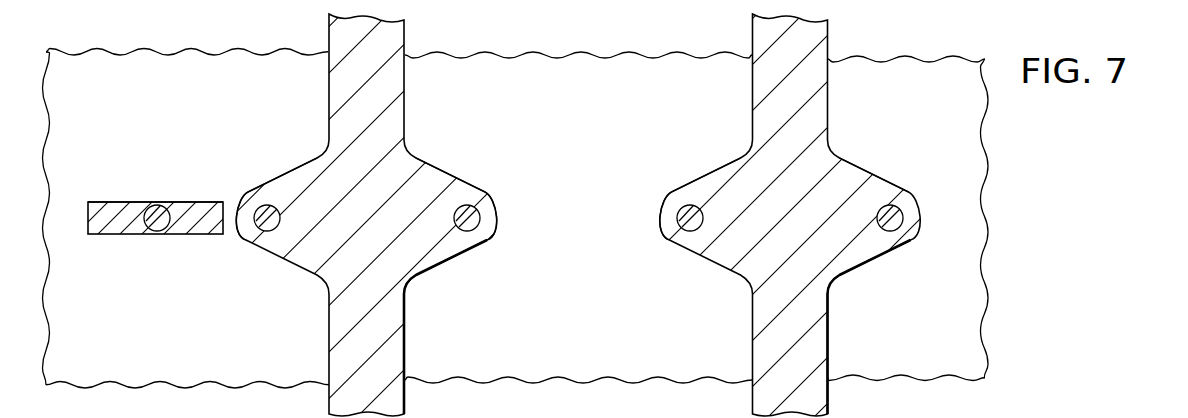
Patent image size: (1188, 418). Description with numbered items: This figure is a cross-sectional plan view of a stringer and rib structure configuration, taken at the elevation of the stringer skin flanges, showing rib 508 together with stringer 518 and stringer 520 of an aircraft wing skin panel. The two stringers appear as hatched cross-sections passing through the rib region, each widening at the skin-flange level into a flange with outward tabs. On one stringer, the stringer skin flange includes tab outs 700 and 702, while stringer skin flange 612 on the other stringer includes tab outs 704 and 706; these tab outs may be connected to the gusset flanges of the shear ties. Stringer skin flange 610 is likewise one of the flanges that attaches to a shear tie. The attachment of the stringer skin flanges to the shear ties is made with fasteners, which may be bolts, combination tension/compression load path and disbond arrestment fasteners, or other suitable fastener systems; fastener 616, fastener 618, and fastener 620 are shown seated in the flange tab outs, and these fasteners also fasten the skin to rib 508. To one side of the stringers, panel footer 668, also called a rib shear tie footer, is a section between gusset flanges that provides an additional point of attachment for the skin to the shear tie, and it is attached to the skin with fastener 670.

The stringer 520 is at (328, 40).
The stringer 518 is at (830, 28).
The tab out 700 is at (301, 166).
The tab out 702 is at (445, 167).
The tab out 704 is at (720, 167).
The tab out 706 is at (890, 188).
The fastener 616 is at (239, 232).
The stringer skin flange 610 is at (503, 220).
The stringer skin flange 612 is at (653, 217).
The fastener 618 is at (497, 207).
The fastener 620 is at (680, 207).
The rib 508 is at (137, 236).
The panel footer 668 is at (192, 203).
The fastener 670 is at (148, 204).